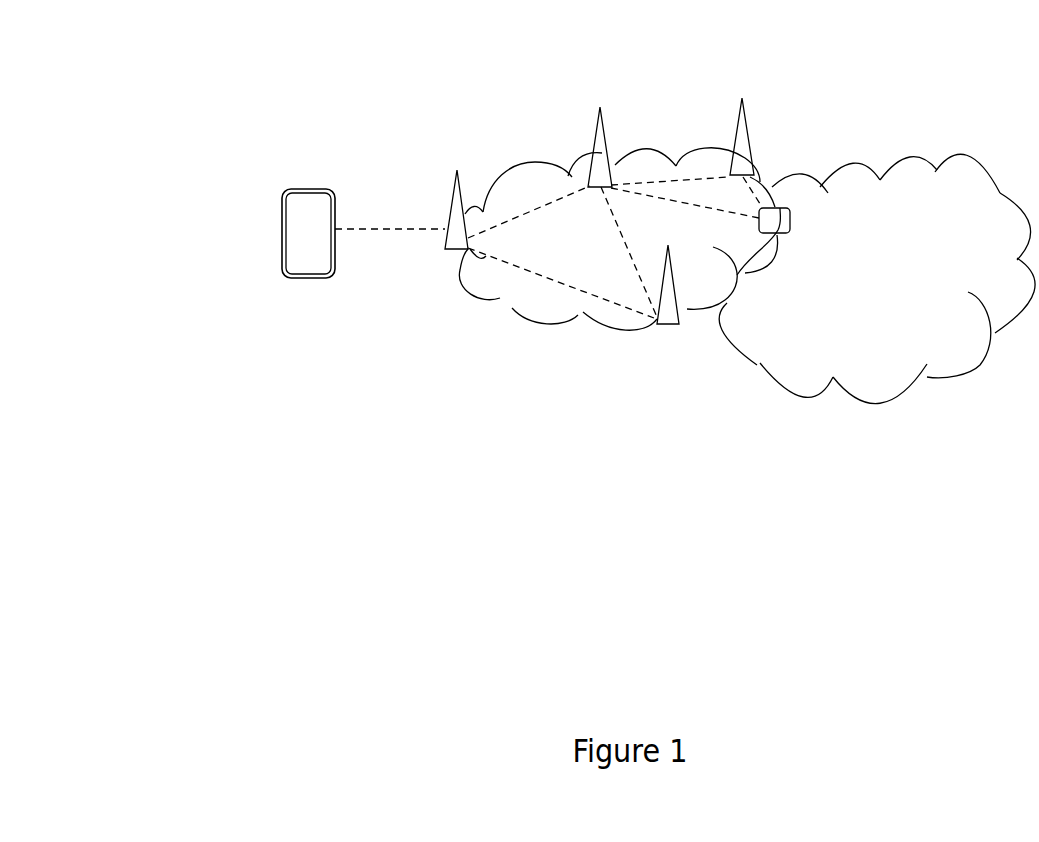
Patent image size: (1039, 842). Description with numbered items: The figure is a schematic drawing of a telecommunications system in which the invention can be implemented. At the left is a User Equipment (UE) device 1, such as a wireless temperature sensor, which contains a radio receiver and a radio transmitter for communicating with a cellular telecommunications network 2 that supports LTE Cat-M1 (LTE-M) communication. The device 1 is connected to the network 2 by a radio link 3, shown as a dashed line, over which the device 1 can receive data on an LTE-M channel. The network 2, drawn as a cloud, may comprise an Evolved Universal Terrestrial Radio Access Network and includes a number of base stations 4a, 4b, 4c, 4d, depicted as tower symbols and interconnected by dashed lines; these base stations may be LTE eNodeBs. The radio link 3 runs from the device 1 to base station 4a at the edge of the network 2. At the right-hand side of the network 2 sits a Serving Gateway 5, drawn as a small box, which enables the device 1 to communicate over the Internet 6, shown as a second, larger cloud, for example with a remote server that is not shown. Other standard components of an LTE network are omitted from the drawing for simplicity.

The User Equipment (UE) device 1 is at (290, 203).
The cellular telecommunications network 2 is at (517, 312).
The radio link 3 is at (390, 229).
The base station 4a is at (455, 181).
The base station 4b is at (598, 114).
The base station 4c is at (740, 109).
The base station 4d is at (670, 327).
The Serving Gateway 5 is at (776, 210).
The Internet 6 is at (908, 167).